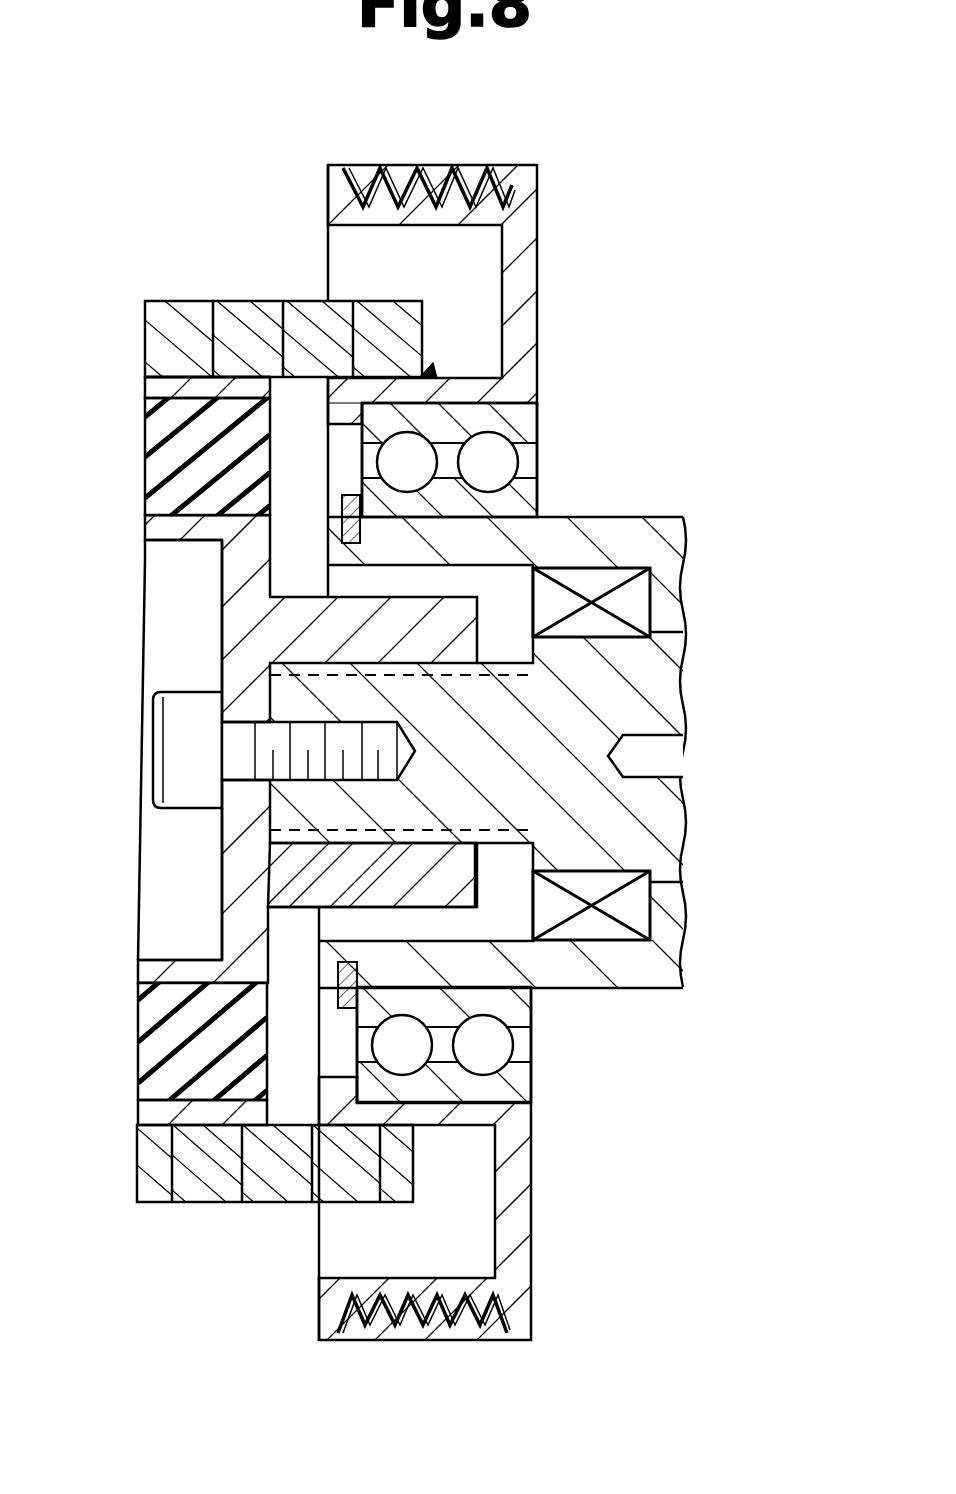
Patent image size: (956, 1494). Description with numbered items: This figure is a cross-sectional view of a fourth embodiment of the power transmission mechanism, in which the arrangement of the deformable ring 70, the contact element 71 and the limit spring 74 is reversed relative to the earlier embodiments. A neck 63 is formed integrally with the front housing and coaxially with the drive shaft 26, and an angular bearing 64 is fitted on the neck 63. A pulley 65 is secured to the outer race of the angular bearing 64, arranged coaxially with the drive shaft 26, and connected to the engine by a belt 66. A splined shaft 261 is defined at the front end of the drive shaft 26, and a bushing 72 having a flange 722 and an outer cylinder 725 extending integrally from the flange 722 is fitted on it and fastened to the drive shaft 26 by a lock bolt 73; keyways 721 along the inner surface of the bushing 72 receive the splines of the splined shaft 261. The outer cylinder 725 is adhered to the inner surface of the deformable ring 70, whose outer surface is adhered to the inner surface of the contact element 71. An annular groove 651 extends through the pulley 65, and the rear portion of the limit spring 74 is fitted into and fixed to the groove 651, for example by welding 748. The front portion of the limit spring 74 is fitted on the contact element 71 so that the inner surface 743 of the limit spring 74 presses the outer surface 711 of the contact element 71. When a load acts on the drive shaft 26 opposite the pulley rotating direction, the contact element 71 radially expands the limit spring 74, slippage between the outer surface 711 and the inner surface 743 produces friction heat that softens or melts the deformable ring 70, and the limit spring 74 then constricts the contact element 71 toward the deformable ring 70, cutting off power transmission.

The drive shaft 26 is at (655, 827).
The splined shaft 261 is at (277, 858).
The neck 63 is at (618, 533).
The angular bearing 64 is at (508, 460).
The pulley 65 is at (328, 190).
The annular groove 651 is at (461, 375).
The belt 66 is at (456, 166).
The deformable ring 70 is at (163, 457).
The contact element 71 is at (145, 388).
The outer surface 711 is at (177, 370).
The bushing 72 is at (267, 637).
The keyways 721 is at (305, 684).
The flange 722 is at (187, 593).
The outer cylinder 725 is at (145, 528).
The lock bolt 73 is at (182, 750).
The limit spring 74 is at (164, 313).
The inner surface 743 is at (233, 380).
The welding 748 is at (427, 373).